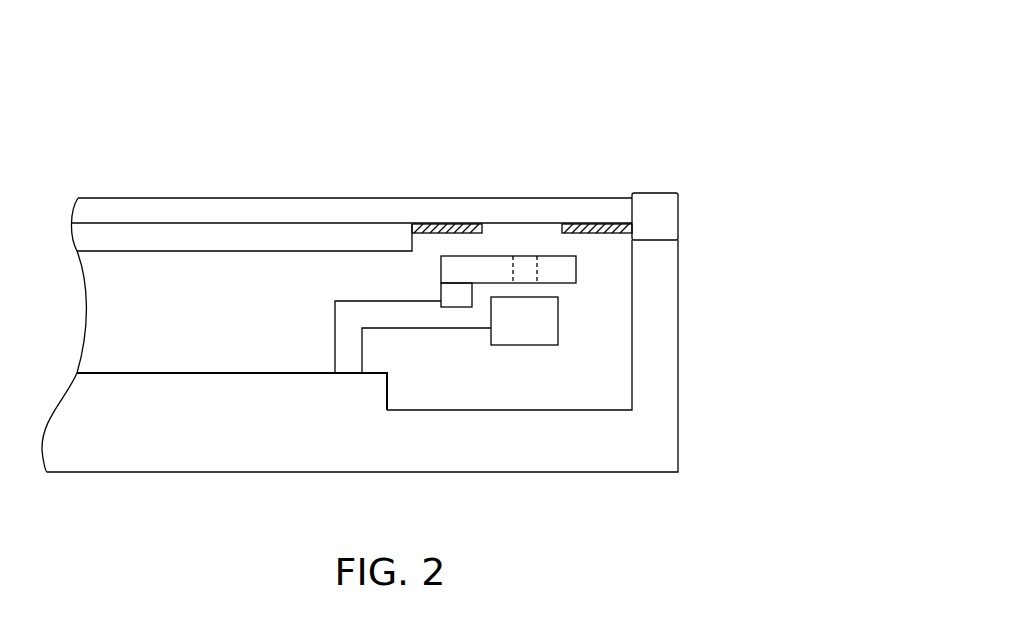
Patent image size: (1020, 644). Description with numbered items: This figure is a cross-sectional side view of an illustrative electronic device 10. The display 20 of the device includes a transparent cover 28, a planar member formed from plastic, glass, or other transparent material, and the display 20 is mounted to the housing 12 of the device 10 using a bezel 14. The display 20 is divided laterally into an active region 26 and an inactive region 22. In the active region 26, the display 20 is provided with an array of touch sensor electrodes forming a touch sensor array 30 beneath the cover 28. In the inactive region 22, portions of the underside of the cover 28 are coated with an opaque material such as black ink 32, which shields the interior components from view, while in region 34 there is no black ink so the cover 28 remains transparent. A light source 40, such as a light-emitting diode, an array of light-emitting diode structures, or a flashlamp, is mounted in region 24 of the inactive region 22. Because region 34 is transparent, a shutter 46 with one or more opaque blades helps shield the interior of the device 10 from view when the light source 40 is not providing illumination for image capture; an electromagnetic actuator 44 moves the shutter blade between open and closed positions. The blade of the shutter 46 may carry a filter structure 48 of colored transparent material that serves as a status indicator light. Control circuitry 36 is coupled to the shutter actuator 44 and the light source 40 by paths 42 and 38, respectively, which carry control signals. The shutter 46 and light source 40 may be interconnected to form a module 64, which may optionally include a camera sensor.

The electronic device 10 is at (755, 70).
The housing 12 is at (668, 377).
The bezel 14 is at (668, 217).
The display 20 is at (70, 200).
The inactive region 22 is at (413, 122).
The region 24 is at (490, 153).
The active region 26 is at (410, 122).
The transparent cover 28 is at (247, 205).
The touch sensor array 30 is at (177, 243).
The black ink 32 is at (449, 228).
The region 34 is at (560, 194).
The control circuitry 36 is at (377, 387).
The path 38 is at (407, 330).
The light source 40 is at (518, 345).
The path 42 is at (362, 300).
The electromagnetic actuator 44 is at (441, 290).
The shutter 46 is at (480, 256).
The filter structure 48 is at (537, 268).
The module 64 is at (580, 252).